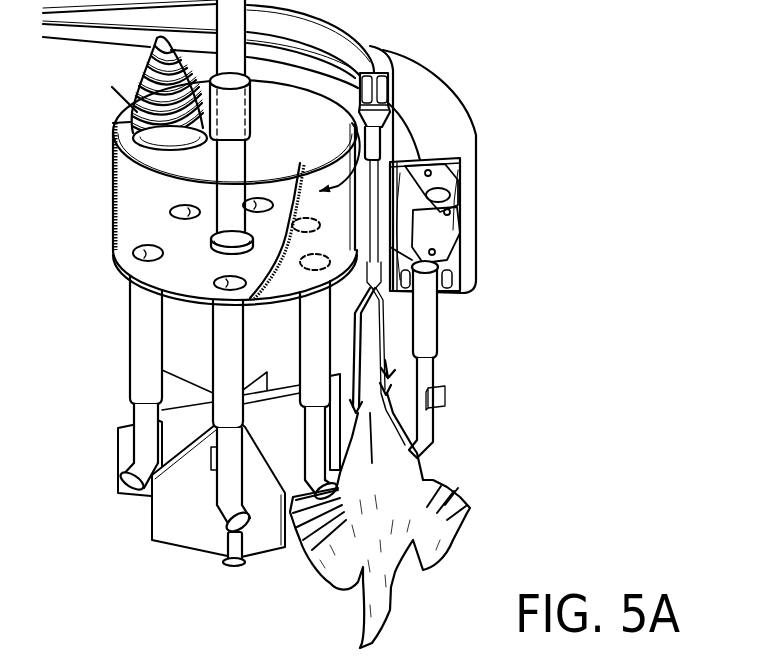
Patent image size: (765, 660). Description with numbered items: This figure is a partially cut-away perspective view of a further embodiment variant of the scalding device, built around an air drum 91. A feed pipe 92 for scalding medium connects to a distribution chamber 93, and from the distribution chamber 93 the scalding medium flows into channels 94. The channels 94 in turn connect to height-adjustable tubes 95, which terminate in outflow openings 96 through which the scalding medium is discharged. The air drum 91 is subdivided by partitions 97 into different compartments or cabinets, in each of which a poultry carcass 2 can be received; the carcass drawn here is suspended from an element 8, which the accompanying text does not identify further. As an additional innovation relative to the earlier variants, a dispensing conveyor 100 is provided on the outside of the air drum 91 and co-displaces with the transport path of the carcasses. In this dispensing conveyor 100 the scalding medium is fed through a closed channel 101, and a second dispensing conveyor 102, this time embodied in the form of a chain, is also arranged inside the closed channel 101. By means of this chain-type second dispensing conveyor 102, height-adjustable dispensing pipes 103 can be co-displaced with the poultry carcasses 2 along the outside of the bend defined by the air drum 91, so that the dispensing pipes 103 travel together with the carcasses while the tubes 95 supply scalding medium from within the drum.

The poultry carcass 2 is at (387, 583).
The shackle hanger 8 is at (377, 228).
The air drum 91 is at (116, 270).
The feed pipe 92 is at (152, 85).
The distribution chamber 93 is at (125, 183).
The channels 94 is at (226, 279).
The height-adjustable tubes 95 is at (138, 352).
The outflow openings 96 is at (125, 492).
The partitions 97 is at (118, 450).
The dispensing conveyor 100 is at (482, 291).
The closed channel 101 is at (457, 175).
The second dispensing conveyor 102 is at (445, 229).
The height-adjustable dispensing pipes 103 is at (430, 325).